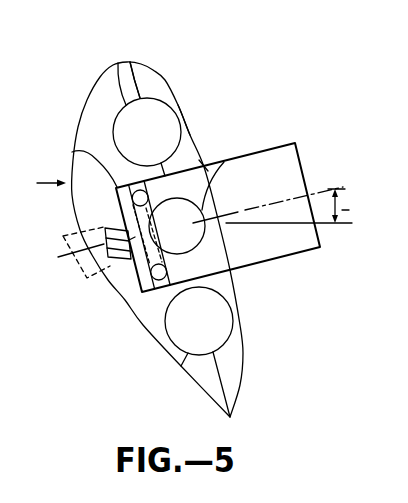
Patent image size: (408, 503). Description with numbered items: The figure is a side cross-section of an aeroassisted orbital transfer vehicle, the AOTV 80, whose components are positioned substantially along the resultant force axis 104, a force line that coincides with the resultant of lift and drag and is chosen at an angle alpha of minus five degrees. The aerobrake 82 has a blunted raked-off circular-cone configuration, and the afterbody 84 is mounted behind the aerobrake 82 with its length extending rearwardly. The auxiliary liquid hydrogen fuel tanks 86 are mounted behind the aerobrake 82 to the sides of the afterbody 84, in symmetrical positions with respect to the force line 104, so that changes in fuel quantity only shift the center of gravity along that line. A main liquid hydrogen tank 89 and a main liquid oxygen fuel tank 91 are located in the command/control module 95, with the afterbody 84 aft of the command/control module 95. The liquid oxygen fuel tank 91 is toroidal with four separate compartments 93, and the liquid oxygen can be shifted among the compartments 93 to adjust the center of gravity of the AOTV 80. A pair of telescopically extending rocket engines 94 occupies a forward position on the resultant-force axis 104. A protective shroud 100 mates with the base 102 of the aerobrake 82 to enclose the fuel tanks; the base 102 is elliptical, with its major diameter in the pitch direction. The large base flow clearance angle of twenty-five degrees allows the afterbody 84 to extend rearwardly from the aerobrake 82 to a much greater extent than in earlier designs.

The AOTV 80 is at (70, 63).
The aerobrake 82 is at (80, 143).
The afterbody 84 is at (273, 259).
The auxiliary liquid hydrogen fuel tanks 86 is at (118, 63).
The main liquid hydrogen tank 89 is at (221, 170).
The main liquid oxygen fuel tank 91 is at (72, 152).
The compartments 93 is at (132, 200).
The rocket engines 94 is at (107, 228).
The command/control module 95 is at (203, 166).
The protective shroud 100 is at (178, 117).
The base of the aerobrake 102 is at (140, 88).
The resultant force axis 104 is at (338, 189).